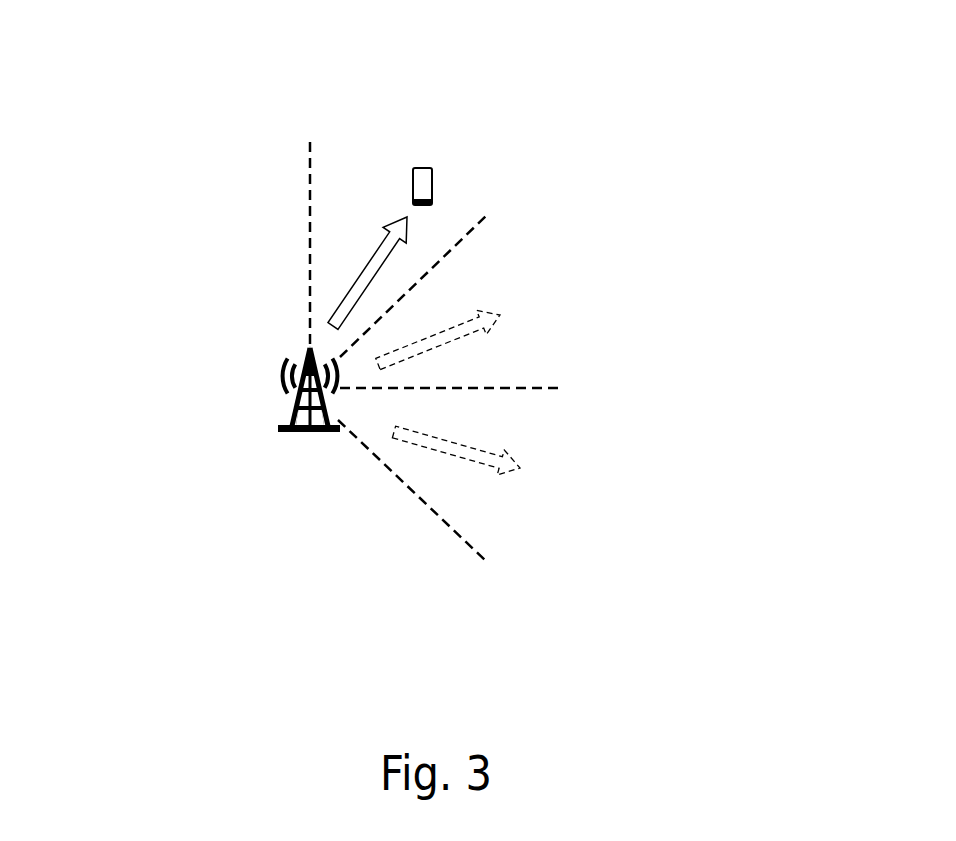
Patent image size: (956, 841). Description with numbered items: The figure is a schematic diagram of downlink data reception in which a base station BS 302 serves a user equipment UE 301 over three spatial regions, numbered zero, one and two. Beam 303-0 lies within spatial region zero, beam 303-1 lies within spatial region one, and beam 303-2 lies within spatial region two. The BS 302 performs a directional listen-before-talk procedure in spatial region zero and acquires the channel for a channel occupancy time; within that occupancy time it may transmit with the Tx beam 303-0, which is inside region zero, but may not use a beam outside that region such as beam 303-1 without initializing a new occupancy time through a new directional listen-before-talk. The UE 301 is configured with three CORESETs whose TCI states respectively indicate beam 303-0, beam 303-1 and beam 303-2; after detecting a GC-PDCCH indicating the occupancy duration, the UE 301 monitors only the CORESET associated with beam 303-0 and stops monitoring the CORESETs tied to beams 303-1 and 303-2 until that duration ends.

The UE 301 is at (432, 168).
The BS 302 is at (283, 468).
The beam 303-0 is at (375, 200).
The beam 303-1 is at (523, 319).
The beam 303-2 is at (488, 487).